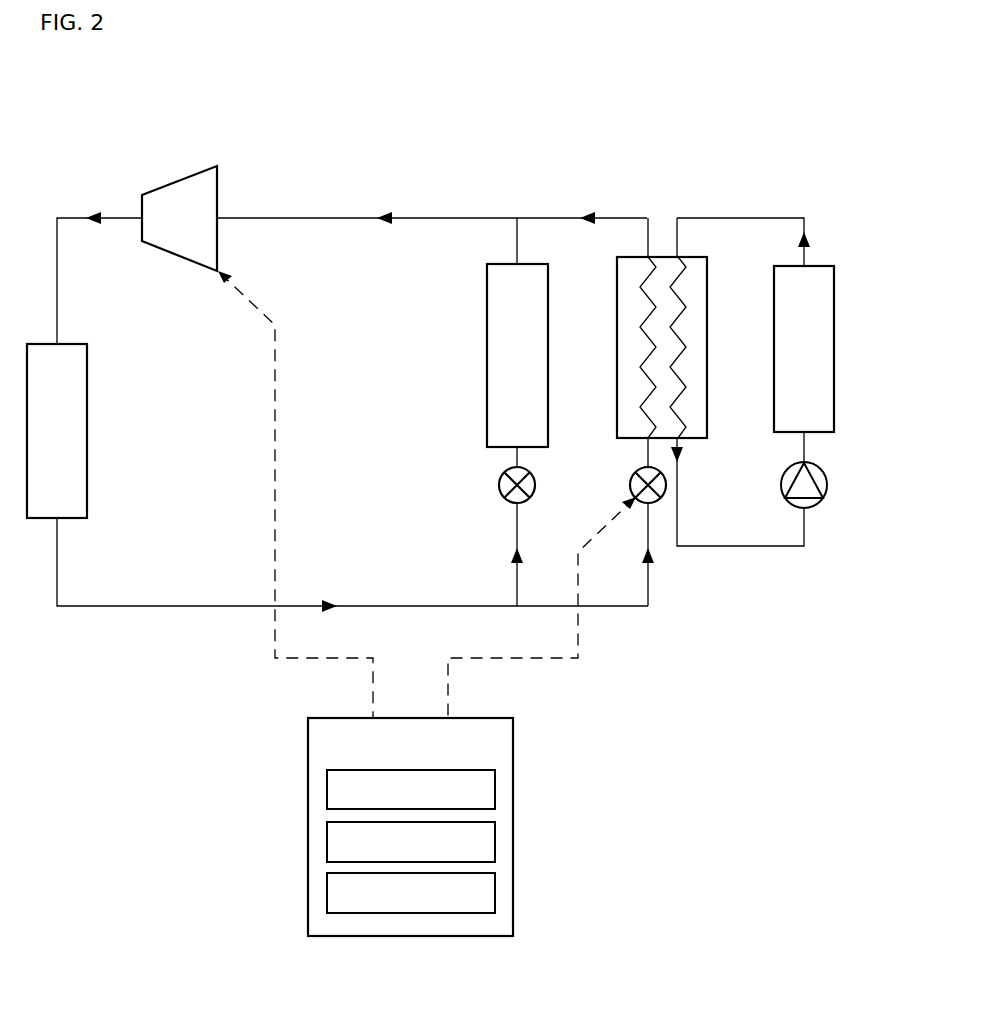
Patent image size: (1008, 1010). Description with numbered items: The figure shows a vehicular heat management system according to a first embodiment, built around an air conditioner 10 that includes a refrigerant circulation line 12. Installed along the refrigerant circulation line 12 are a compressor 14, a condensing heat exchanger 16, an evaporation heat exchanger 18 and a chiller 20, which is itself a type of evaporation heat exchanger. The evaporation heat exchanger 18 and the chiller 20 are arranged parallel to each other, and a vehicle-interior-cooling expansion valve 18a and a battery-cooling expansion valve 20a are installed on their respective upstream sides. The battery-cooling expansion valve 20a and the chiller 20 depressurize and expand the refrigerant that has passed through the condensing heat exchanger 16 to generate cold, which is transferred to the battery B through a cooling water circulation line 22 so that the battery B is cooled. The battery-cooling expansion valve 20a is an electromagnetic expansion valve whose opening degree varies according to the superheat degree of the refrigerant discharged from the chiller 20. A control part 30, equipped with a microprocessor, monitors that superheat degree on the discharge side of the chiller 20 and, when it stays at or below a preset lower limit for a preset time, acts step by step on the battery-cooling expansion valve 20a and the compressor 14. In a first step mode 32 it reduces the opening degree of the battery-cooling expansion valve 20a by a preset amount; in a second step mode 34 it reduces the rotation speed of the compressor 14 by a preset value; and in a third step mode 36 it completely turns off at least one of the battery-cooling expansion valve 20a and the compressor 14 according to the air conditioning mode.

The air conditioner 10 is at (388, 190).
The refrigerant circulation line 12 is at (288, 217).
The compressor 14 is at (200, 165).
The condensing heat exchanger 16 is at (87, 384).
The evaporation heat exchanger 18 is at (487, 383).
The vehicle-interior-cooling expansion valve 18a is at (499, 485).
The chiller 20 is at (690, 257).
The battery-cooling expansion valve 20a is at (630, 485).
The cooling water circulation line 22 is at (742, 218).
The battery B is at (834, 326).
The control part 30 is at (513, 738).
The first step mode 32 is at (495, 787).
The second step mode 34 is at (495, 840).
The third step mode 36 is at (495, 891).